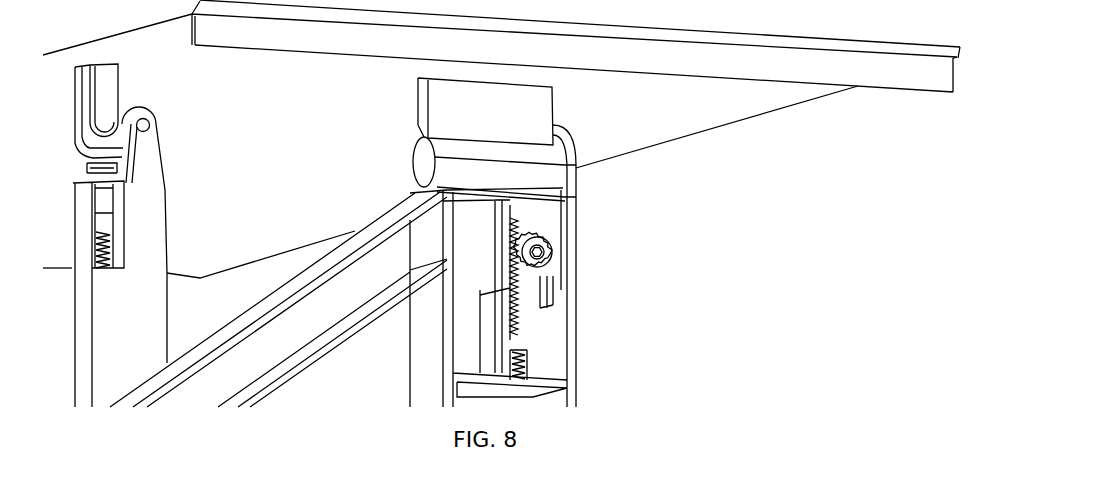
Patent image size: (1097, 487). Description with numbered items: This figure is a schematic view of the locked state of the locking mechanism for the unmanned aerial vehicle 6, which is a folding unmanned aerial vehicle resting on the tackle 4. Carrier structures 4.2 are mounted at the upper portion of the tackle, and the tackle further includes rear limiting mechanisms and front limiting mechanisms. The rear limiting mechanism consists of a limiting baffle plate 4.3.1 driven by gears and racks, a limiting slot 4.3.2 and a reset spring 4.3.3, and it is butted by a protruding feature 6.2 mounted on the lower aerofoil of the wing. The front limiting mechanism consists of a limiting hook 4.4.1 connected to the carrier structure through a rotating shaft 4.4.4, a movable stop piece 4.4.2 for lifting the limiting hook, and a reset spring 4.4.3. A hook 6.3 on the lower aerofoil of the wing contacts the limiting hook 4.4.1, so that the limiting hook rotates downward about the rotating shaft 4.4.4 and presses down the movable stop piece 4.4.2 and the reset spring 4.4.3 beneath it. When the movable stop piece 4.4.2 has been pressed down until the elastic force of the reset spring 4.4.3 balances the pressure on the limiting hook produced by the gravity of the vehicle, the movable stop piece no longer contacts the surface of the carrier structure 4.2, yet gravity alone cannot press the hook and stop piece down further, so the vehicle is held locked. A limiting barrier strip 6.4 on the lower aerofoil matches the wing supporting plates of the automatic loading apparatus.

The tackle 4 is at (587, 352).
The carrier structure 4.2 is at (300, 312).
The limiting baffle plate 4.3.1 is at (548, 142).
The limiting slot 4.3.2 is at (537, 177).
The reset spring 4.3.3 is at (520, 362).
The limiting hook 4.4.1 is at (105, 150).
The movable stop piece 4.4.2 is at (103, 197).
The reset spring 4.4.3 is at (100, 258).
The rotating shaft 4.4.4 is at (149, 126).
The unmanned aerial vehicle 6 is at (309, 74).
The protruding feature 6.2 is at (503, 100).
The hook 6.3 is at (105, 77).
The limiting barrier strip 6.4 is at (645, 57).